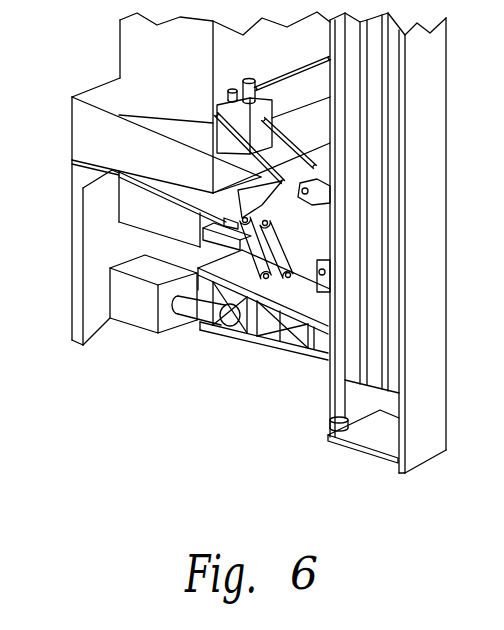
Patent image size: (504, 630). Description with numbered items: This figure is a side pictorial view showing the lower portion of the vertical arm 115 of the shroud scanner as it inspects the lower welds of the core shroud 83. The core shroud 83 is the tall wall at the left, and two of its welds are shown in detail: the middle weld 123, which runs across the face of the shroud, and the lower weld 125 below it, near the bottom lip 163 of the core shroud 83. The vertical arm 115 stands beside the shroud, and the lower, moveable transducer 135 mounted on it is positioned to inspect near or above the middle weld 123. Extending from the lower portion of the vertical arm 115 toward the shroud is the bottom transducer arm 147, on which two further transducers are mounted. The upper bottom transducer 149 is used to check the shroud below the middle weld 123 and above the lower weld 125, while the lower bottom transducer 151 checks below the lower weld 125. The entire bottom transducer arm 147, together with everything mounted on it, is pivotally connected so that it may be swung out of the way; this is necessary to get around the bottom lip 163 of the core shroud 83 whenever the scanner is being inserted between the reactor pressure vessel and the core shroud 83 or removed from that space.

The core shroud 83 is at (183, 79).
The vertical arm 115 is at (424, 481).
The middle weld 123 is at (130, 113).
The lower weld 125 is at (82, 168).
The lower moveable transducer 135 is at (266, 113).
The bottom transducer arm 147 is at (272, 343).
The upper bottom transducer 149 is at (173, 221).
The lower bottom transducer 151 is at (138, 318).
The bottom lip 163 is at (140, 178).